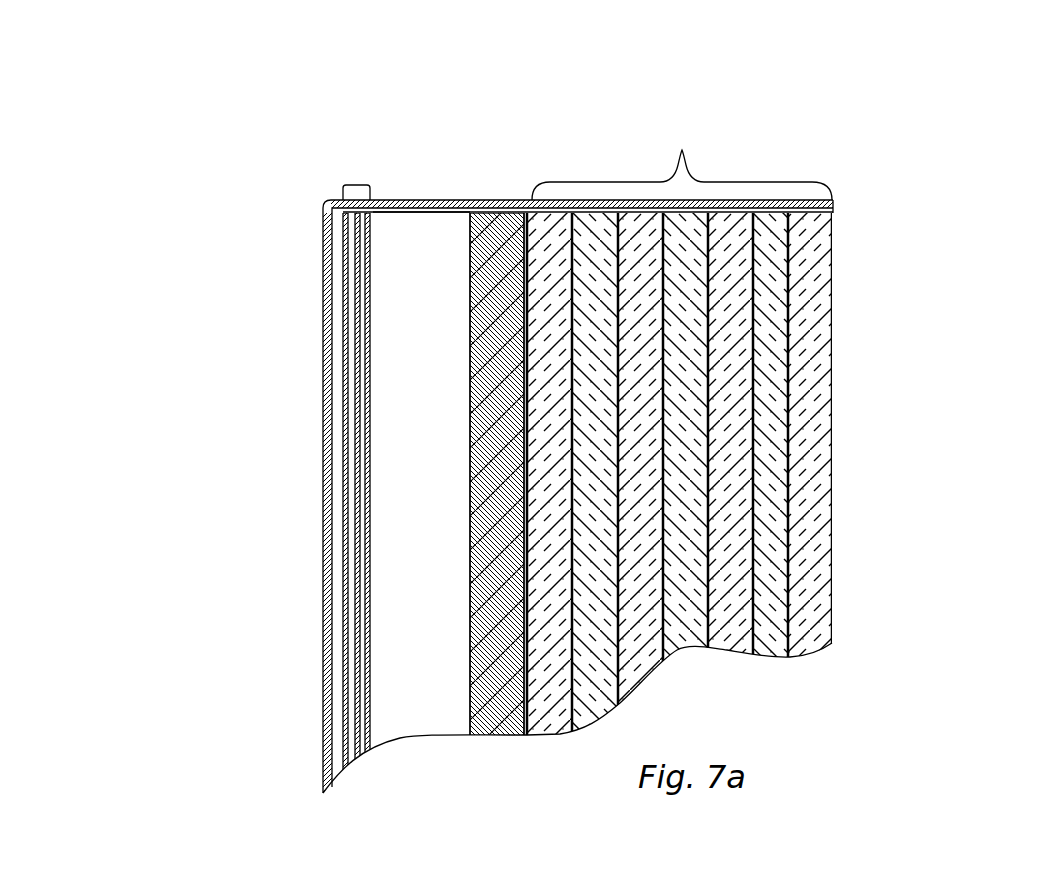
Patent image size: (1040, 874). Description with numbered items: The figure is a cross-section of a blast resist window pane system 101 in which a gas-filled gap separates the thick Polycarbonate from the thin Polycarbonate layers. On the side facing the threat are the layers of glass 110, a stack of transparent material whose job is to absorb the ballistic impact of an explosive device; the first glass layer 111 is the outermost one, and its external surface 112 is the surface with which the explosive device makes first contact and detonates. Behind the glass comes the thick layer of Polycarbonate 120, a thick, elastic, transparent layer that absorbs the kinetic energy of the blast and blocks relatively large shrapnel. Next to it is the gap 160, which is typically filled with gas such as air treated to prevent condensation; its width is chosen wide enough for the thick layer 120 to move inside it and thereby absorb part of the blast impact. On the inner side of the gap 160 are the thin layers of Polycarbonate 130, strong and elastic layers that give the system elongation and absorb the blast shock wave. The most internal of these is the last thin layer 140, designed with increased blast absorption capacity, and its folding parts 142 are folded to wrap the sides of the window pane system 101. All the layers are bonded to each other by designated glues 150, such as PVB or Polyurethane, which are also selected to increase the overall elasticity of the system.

The blast resist window pane system 101 is at (895, 257).
The layers of glass 110 is at (748, 462).
The first glass layer 111 is at (810, 400).
The external surface 112 is at (833, 515).
The thick layer of Polycarbonate 120 is at (495, 248).
The thin layers of Polycarbonate 130 is at (358, 185).
The last thin layer 140 is at (325, 313).
The folding parts 142 is at (399, 200).
The glues 150 is at (338, 487).
The gap 160 is at (427, 267).